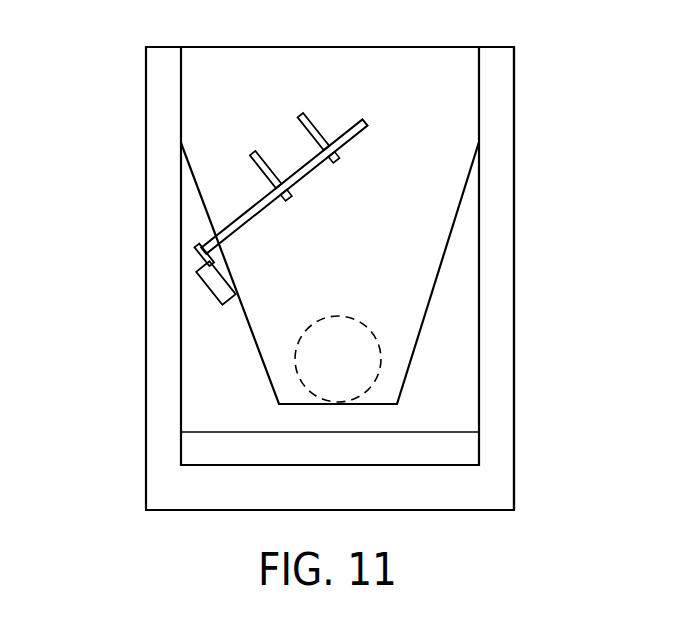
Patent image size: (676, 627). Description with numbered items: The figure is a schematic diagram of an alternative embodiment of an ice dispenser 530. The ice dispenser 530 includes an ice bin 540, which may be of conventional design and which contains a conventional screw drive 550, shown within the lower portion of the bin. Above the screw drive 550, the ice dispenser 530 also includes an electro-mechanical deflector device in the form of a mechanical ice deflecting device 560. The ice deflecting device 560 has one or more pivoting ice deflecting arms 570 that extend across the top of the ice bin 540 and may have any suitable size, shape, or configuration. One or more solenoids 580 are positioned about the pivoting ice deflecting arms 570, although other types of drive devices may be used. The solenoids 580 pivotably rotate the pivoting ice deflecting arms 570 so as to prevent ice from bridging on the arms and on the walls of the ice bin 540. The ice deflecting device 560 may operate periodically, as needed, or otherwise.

The ice dispenser 530 is at (108, 50).
The ice bin 540 is at (515, 98).
The screw drive 550 is at (357, 322).
The mechanical ice deflecting device 560 is at (320, 116).
The pivoting ice deflecting arms 570 is at (263, 158).
The solenoids 580 is at (208, 288).